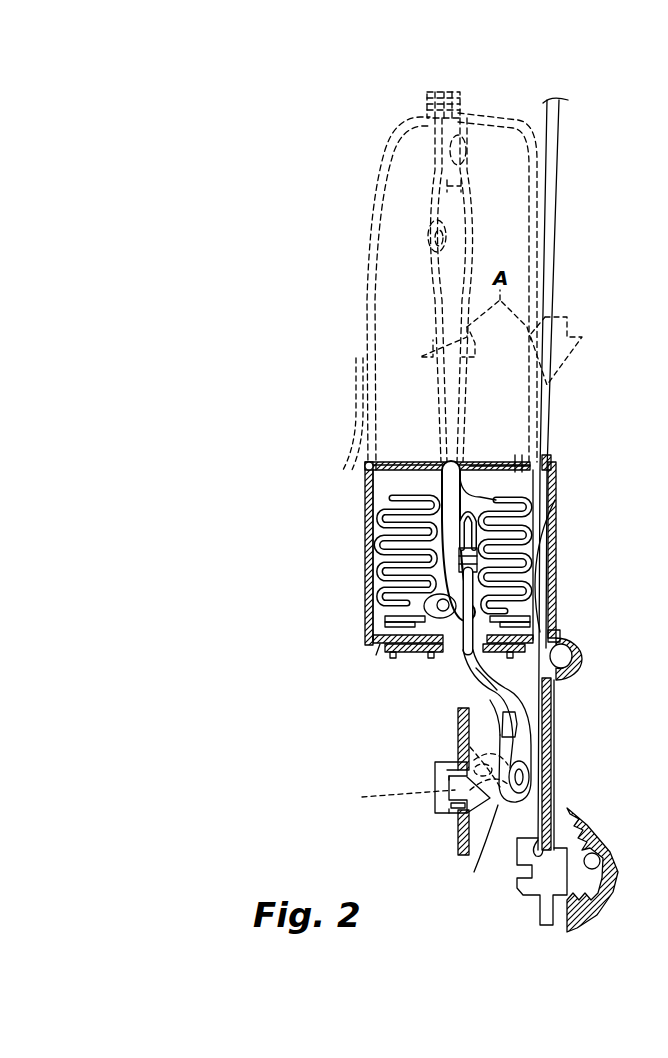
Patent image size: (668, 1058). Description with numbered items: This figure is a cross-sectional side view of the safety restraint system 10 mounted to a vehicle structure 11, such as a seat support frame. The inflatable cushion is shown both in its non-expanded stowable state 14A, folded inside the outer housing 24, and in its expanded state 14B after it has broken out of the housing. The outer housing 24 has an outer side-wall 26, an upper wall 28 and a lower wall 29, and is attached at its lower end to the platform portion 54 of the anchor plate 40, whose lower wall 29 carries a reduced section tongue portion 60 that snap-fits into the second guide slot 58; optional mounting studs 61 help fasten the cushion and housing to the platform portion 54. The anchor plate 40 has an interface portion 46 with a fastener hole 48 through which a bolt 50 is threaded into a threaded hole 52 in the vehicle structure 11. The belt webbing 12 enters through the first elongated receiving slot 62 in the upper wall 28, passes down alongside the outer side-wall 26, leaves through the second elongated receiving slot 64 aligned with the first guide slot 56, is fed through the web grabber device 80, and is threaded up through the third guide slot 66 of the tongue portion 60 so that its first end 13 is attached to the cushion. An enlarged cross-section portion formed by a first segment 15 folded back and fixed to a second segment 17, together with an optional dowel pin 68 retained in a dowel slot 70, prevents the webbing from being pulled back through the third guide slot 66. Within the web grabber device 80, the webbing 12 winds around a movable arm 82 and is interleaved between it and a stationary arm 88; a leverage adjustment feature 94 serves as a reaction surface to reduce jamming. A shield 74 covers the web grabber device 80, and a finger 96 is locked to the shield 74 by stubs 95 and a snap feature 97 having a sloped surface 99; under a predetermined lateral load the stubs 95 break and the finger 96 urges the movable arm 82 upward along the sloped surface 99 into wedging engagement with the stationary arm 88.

The safety restraint system 10 is at (338, 350).
The vehicle structure 11 is at (587, 826).
The belt webbing 12 is at (548, 222).
The first end 13 is at (462, 474).
The non-expanded stowable state 14A is at (395, 497).
The expanded state 14B is at (368, 222).
The first segment 15 is at (433, 522).
The second segment 17 is at (515, 455).
The outer housing 24 is at (404, 462).
The outer side-wall 26 is at (366, 522).
The upper wall 28 is at (486, 461).
The lower wall 29 is at (378, 650).
The anchor plate 40 is at (586, 637).
The interface portion 46 is at (556, 750).
The fastener hole 48 is at (536, 840).
The bolt 50 is at (518, 896).
The threaded hole 52 is at (600, 855).
The platform portion 54 is at (405, 652).
The first guide slot 56 is at (556, 630).
The second guide slot 58 is at (462, 650).
The tongue portion 60 is at (470, 665).
The mounting studs 61 is at (372, 628).
The first elongated receiving slot 62 is at (545, 456).
The second elongated receiving slot 64 is at (575, 676).
The third guide slot 66 is at (495, 669).
The dowel pin 68 is at (440, 603).
The dowel slot 70 is at (386, 620).
The shield 74 is at (450, 812).
The web grabber device 80 is at (490, 726).
The movable arm 82 is at (505, 802).
The stationary arm 88 is at (504, 716).
The leverage adjustment feature 94 is at (424, 779).
The stubs 95 is at (447, 776).
The finger 96 is at (434, 784).
The snap feature 97 is at (474, 872).
The sloped surface 99 is at (455, 752).